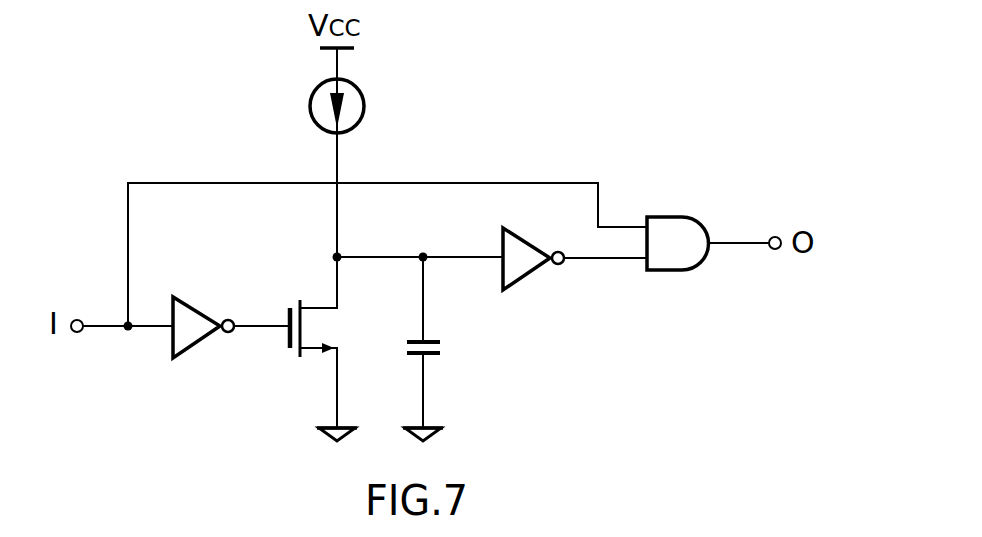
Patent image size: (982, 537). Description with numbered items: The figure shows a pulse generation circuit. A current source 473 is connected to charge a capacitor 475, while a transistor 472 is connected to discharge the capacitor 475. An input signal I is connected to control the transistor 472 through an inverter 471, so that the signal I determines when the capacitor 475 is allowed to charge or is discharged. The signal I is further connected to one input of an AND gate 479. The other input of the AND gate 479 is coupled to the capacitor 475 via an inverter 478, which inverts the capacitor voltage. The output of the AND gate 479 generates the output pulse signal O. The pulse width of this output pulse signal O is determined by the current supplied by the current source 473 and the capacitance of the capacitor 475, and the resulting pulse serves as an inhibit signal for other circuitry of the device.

The inverter 471 is at (187, 298).
The transistor 472 is at (337, 326).
The current source 473 is at (366, 97).
The capacitor 475 is at (440, 348).
The inverter 478 is at (528, 280).
The AND gate 479 is at (655, 212).